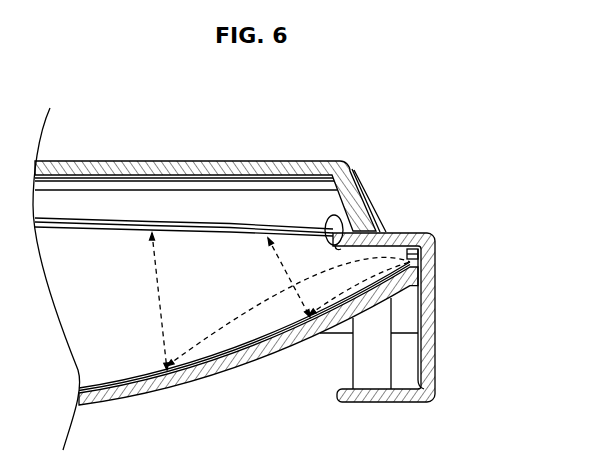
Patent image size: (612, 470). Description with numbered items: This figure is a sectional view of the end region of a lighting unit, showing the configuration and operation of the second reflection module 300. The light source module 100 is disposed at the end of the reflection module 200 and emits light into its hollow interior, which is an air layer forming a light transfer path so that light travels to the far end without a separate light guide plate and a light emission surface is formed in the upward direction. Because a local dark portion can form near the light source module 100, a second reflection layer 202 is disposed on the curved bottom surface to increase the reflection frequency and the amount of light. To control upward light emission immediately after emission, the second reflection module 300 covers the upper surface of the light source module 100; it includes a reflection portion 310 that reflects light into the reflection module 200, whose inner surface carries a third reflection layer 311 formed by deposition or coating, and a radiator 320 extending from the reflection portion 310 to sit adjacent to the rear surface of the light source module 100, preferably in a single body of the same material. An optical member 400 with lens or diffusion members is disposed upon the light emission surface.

The light source module 100 is at (397, 224).
The reflection module 200 is at (233, 367).
The second reflection layer 202 is at (137, 222).
The second reflection module 300 is at (511, 242).
The reflection portion 310 is at (391, 231).
The third reflection layer 311 is at (342, 219).
The radiator 320 is at (435, 258).
The optical member 400 is at (231, 162).